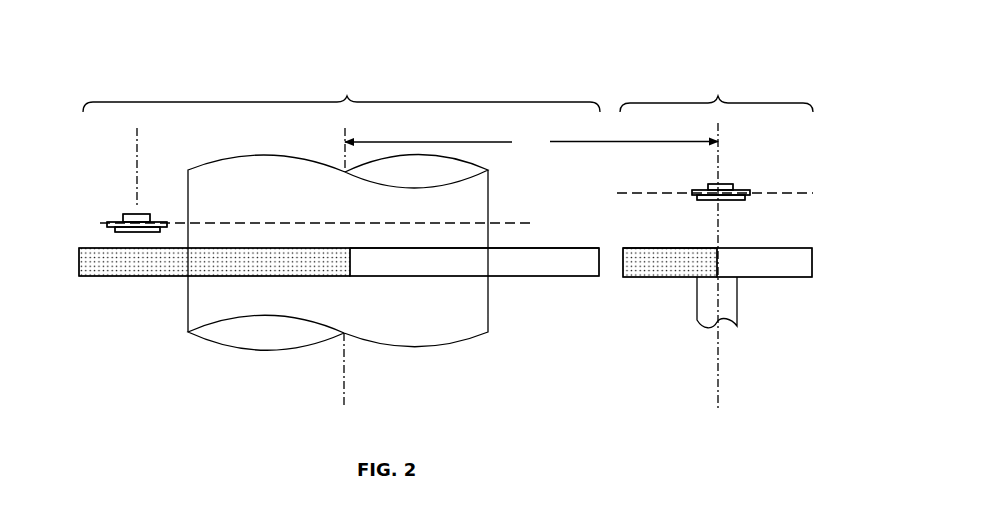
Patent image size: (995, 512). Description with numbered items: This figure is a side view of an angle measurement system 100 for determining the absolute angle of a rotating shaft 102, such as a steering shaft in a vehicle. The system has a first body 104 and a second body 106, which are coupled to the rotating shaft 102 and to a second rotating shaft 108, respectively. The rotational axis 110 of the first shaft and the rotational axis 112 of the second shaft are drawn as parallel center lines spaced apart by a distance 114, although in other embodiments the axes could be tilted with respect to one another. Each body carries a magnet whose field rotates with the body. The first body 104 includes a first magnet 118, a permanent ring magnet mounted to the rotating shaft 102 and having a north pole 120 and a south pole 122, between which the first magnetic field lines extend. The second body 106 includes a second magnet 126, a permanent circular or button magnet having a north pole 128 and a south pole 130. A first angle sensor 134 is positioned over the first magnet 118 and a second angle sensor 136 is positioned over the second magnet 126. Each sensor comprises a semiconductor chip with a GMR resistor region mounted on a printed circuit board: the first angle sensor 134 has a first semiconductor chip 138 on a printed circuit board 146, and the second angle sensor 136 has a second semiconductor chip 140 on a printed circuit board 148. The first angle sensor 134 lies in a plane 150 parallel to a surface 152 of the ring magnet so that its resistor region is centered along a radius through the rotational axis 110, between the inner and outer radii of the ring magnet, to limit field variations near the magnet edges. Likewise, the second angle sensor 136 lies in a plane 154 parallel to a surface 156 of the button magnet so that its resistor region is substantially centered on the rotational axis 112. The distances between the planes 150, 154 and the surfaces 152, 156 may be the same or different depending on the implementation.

The angle measurement system 100 is at (126, 44).
The rotating shaft 102 is at (361, 211).
The first body 104 is at (364, 89).
The second body 106 is at (736, 89).
The rotating shaft 108 is at (736, 305).
The rotational axis 110 is at (342, 383).
The rotational axis 112 is at (715, 373).
The distance 114 is at (531, 141).
The first magnet 118 is at (95, 242).
The north pole 120 is at (227, 272).
The south pole 122 is at (496, 272).
The second magnet 126 is at (790, 241).
The north pole 128 is at (687, 274).
The south pole 130 is at (782, 274).
The first angle sensor 134 is at (119, 203).
The second angle sensor 136 is at (736, 176).
The first semiconductor chip 138 is at (140, 218).
The second semiconductor chip 140 is at (715, 185).
The printed circuit board 146 is at (145, 228).
The printed circuit board 148 is at (705, 200).
The plane 150 is at (502, 224).
The surface 152 is at (538, 248).
The plane 154 is at (785, 192).
The surface 156 is at (687, 248).